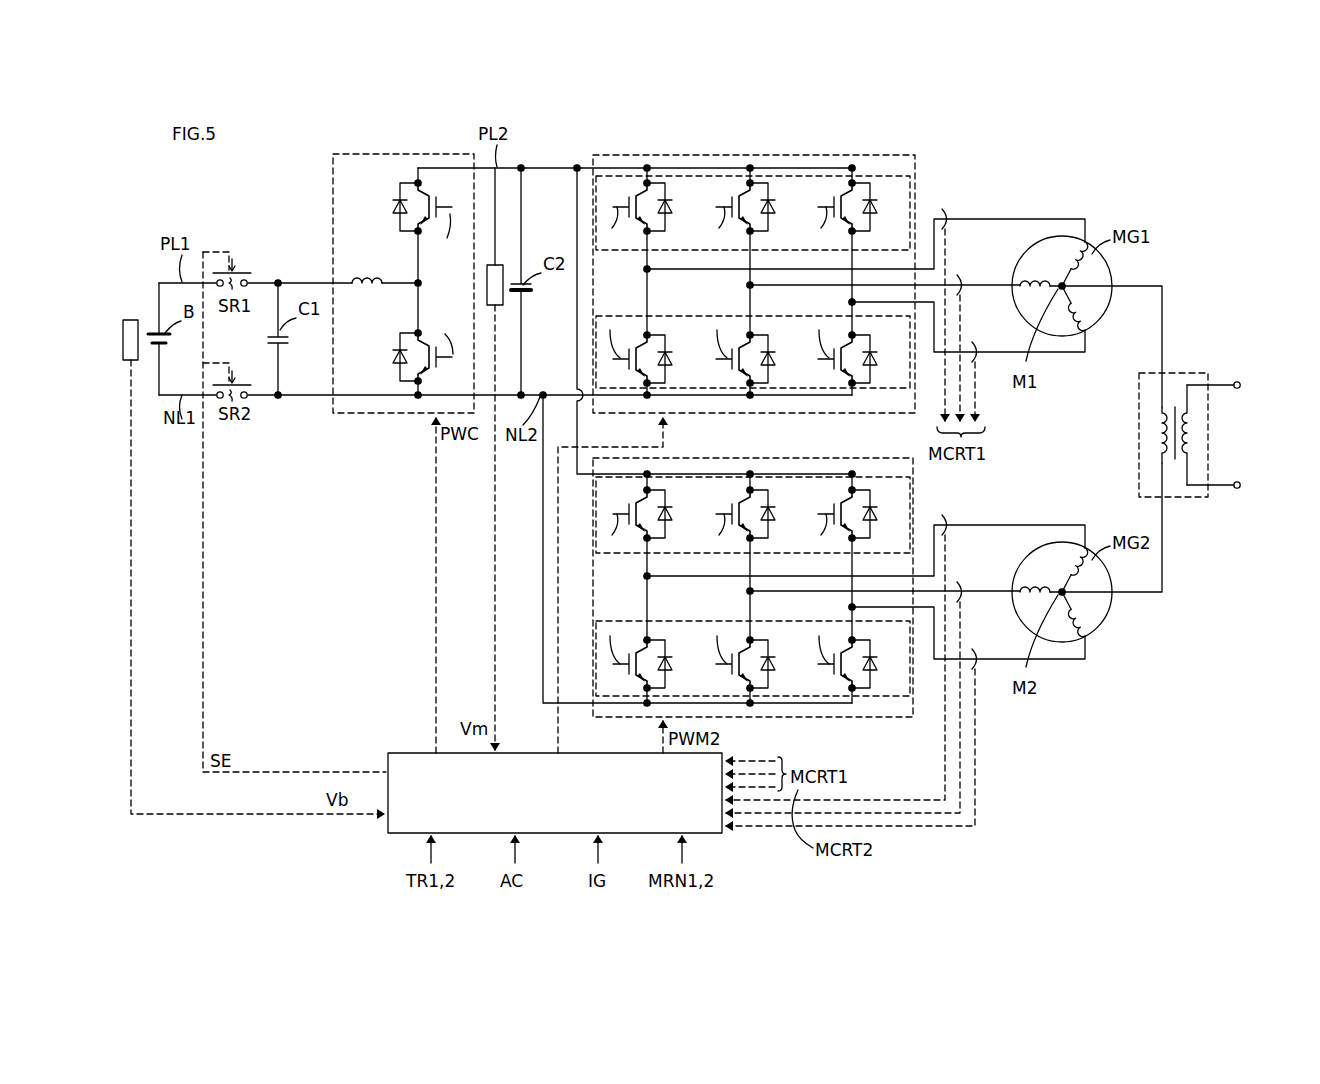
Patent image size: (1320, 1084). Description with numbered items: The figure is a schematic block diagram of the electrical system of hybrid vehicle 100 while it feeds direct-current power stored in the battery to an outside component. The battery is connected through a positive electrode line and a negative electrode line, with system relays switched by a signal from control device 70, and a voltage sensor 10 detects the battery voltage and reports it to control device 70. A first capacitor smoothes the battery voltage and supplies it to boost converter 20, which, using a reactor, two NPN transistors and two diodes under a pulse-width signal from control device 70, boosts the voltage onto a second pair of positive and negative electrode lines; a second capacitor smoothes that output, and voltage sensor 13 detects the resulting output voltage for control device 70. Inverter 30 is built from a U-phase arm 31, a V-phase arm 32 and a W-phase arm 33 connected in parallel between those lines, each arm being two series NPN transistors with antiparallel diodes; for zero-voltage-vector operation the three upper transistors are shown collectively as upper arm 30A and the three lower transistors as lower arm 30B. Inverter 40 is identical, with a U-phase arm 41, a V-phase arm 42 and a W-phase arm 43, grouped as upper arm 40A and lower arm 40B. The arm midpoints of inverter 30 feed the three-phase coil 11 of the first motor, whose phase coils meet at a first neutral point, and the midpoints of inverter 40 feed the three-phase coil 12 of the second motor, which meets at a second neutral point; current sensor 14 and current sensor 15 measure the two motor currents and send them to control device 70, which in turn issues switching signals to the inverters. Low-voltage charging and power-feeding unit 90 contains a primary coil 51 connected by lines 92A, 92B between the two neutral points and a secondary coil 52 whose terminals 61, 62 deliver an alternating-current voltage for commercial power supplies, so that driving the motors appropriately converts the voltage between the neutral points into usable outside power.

The voltage sensor 10 is at (131, 318).
The three-phase coil 11 is at (1067, 261).
The three-phase coil 12 is at (1067, 567).
The voltage sensor 13 is at (495, 264).
The current sensor 14 is at (947, 218).
The current sensor 15 is at (947, 525).
The boost converter 20 is at (352, 414).
The inverter 30 is at (839, 280).
The upper arm 30A is at (872, 175).
The lower arm 30B is at (905, 390).
The U-phase arm 31 is at (641, 279).
The V-phase arm 32 is at (743, 295).
The W-phase arm 33 is at (845, 312).
The inverter 40 is at (839, 600).
The upper arm 40A is at (913, 477).
The lower arm 40B is at (905, 694).
The U-phase arm 41 is at (641, 586).
The V-phase arm 42 is at (743, 601).
The W-phase arm 43 is at (845, 617).
The primary coil 51 is at (1157, 438).
The secondary coil 52 is at (1195, 438).
The output terminal 61 is at (1244, 386).
The output terminal 62 is at (1244, 486).
The control device 70 is at (400, 752).
The low-voltage charging and power-feeding unit 90 is at (1177, 421).
The line 92A is at (1165, 318).
The line 92B is at (1165, 598).
The hybrid vehicle 100 is at (717, 137).